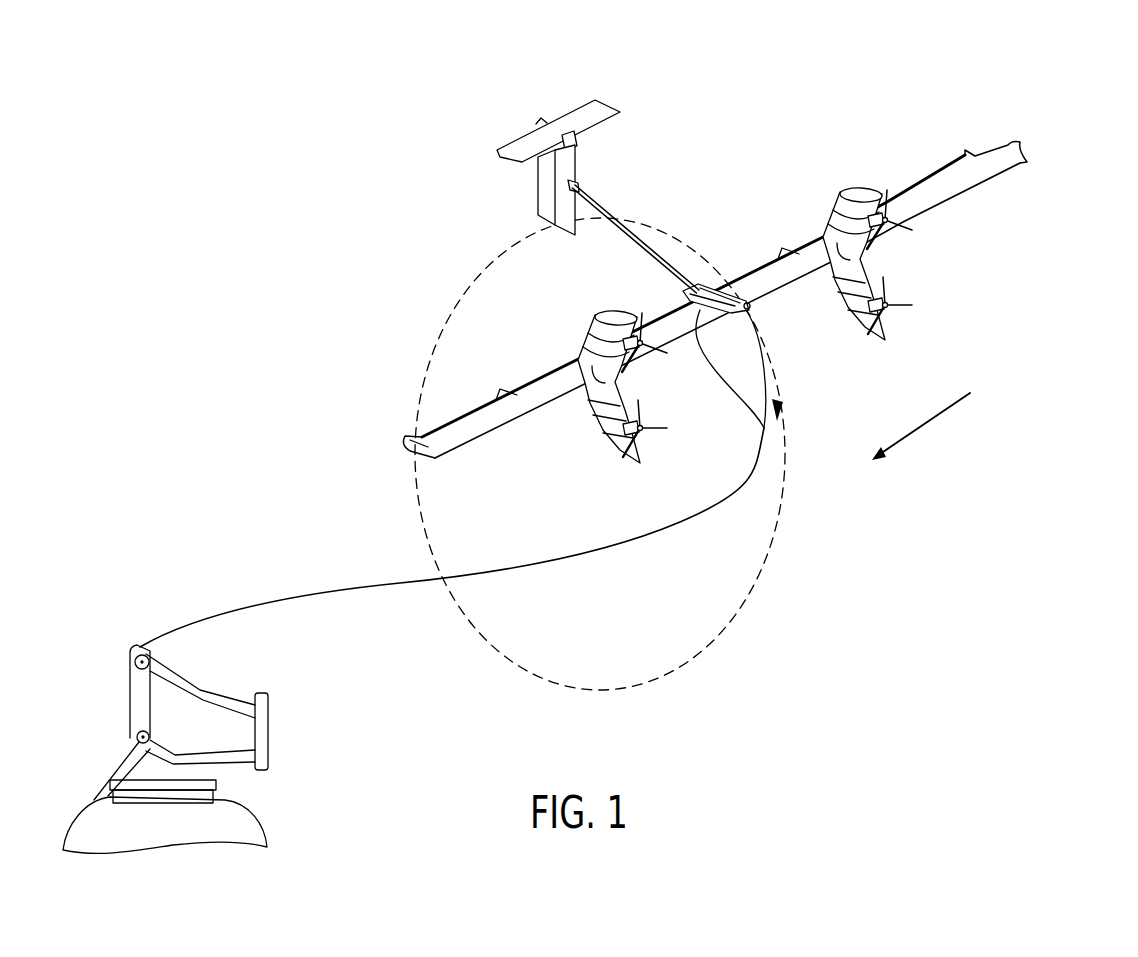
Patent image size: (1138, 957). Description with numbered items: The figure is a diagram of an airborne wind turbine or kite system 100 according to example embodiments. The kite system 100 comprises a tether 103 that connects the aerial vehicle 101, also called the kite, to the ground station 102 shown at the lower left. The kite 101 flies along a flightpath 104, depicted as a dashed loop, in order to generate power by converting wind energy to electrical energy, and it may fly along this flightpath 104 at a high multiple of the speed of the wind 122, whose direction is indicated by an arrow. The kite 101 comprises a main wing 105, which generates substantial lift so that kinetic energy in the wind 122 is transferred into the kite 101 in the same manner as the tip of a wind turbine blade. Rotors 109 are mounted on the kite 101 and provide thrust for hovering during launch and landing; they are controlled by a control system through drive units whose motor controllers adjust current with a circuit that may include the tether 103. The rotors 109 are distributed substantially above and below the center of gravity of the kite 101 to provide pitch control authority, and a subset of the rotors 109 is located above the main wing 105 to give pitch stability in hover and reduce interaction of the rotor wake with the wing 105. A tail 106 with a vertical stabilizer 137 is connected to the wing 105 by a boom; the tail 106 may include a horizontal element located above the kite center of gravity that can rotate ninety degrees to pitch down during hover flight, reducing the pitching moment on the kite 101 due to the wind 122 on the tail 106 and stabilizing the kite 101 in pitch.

The AWT system 100 is at (130, 278).
The aerial vehicle 101 is at (1105, 128).
The ground station 102 is at (138, 702).
The tether 103 is at (248, 605).
The flightpath 104 is at (366, 301).
The main wing 105 is at (778, 275).
The tail 106 is at (612, 103).
The rotors 109 is at (650, 355).
The wind 122 is at (890, 446).
The vertical stabilizer 137 is at (563, 227).